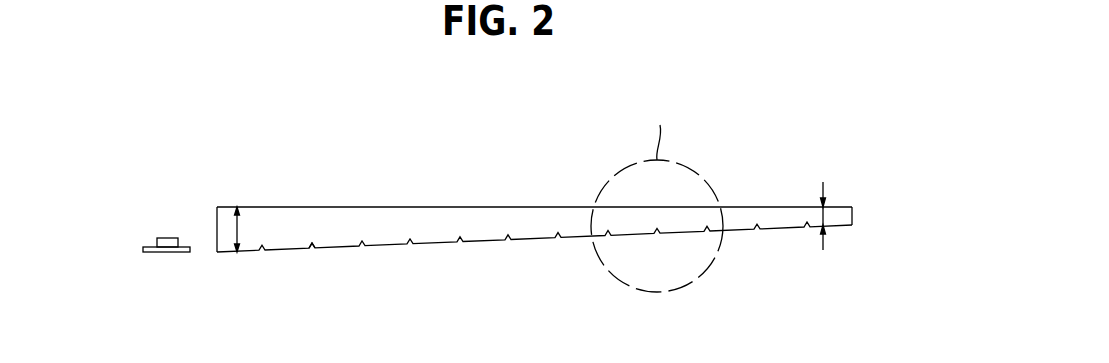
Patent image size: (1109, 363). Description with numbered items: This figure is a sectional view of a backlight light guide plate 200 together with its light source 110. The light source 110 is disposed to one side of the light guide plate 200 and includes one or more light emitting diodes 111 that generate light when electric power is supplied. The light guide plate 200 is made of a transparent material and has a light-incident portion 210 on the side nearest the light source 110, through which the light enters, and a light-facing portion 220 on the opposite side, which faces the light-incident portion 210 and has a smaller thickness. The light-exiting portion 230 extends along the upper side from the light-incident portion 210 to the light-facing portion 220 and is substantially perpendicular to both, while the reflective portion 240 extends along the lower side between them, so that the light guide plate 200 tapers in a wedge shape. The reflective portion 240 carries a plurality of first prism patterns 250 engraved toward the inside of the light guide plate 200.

The light source 110 is at (142, 258).
The light emitting diode 111 is at (168, 238).
The light guide plate 200 is at (533, 180).
The light-incident portion 210 is at (217, 232).
The light-facing portion 220 is at (852, 213).
The light-exiting portion 230 is at (415, 207).
The reflective portion 240 is at (388, 247).
The first prism pattern 250 is at (312, 252).